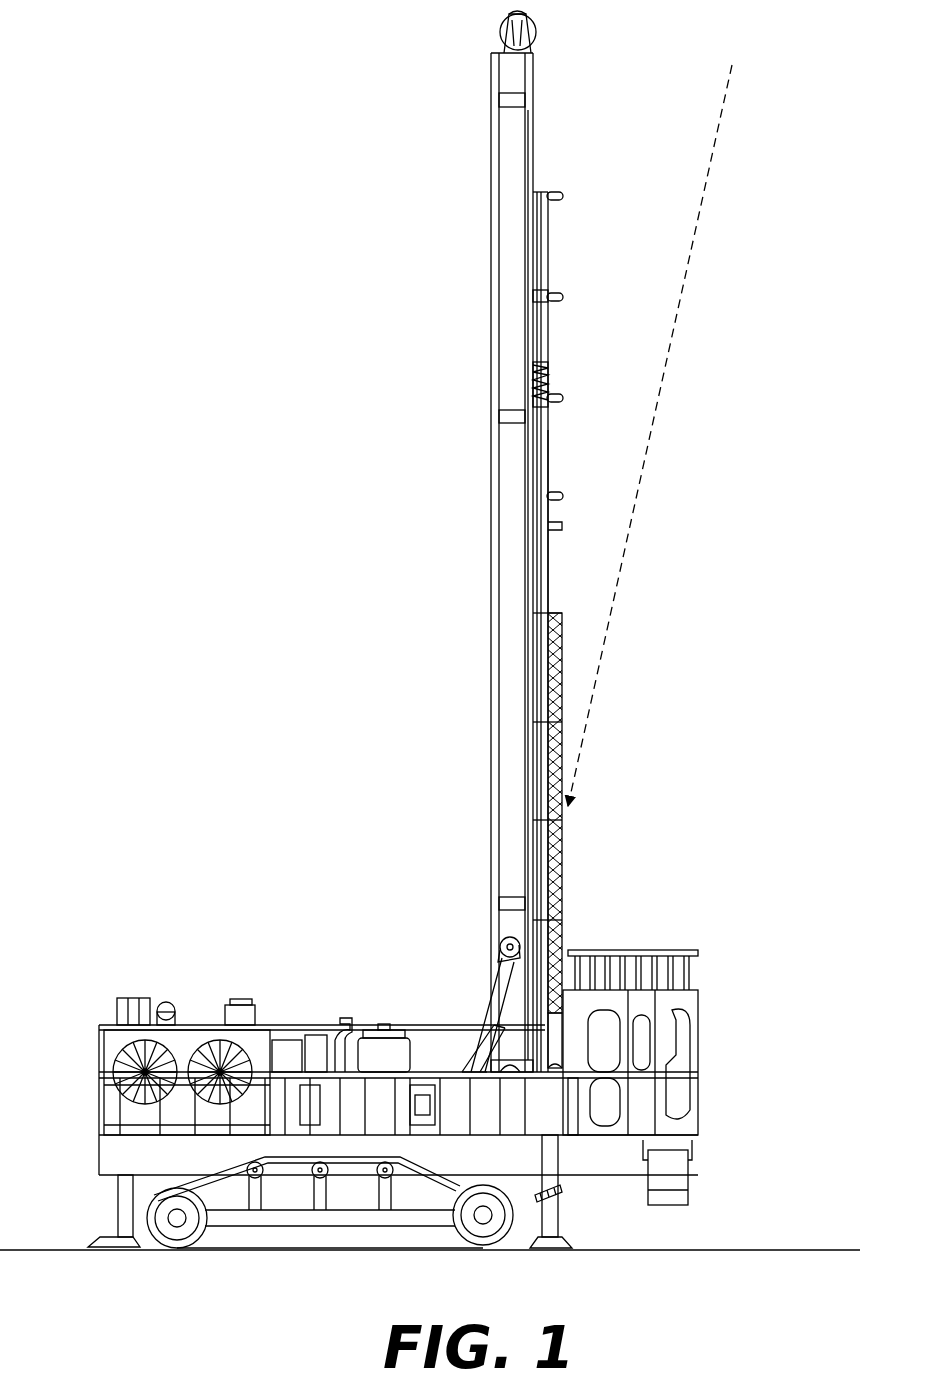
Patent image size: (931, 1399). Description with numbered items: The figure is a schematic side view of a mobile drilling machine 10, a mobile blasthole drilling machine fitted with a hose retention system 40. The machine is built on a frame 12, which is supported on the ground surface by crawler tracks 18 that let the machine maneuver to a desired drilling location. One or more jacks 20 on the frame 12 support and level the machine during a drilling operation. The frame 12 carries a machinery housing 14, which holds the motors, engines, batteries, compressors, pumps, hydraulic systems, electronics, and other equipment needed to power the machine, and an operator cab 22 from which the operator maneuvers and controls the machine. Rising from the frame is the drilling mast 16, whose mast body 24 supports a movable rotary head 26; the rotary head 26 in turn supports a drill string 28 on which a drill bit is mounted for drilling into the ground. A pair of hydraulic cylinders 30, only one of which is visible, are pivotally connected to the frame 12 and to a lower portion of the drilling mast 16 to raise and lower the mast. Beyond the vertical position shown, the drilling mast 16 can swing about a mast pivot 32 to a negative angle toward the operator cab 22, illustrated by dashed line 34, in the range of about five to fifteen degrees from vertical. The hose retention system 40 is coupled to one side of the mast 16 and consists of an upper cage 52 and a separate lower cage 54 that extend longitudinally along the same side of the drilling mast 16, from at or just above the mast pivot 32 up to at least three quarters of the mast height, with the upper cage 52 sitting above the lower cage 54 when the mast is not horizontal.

The mobile drilling machine 10 is at (217, 558).
The frame 12 is at (136, 1168).
The machinery housing 14 is at (178, 942).
The drilling mast 16 is at (462, 268).
The crawler tracks 18 is at (458, 1248).
The jacks 20 is at (99, 1200).
The operator cab 22 is at (635, 975).
The mast body 24 is at (515, 350).
The rotary head 26 is at (548, 378).
The drill string 28 is at (540, 582).
The hydraulic cylinders 30 is at (470, 1043).
The mast pivot 32 is at (510, 1060).
The dashed line 34 is at (676, 318).
The hose retention system 40 is at (588, 232).
The upper cage 52 is at (572, 332).
The lower cage 54 is at (566, 806).